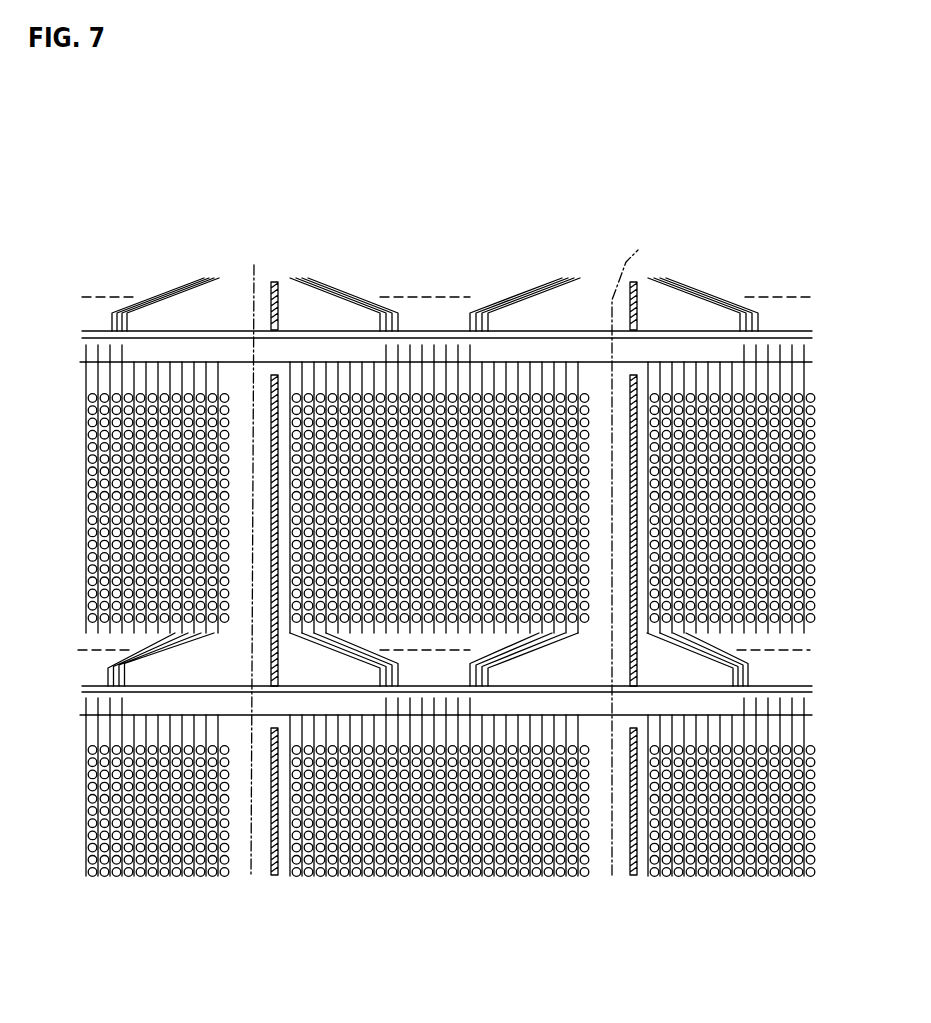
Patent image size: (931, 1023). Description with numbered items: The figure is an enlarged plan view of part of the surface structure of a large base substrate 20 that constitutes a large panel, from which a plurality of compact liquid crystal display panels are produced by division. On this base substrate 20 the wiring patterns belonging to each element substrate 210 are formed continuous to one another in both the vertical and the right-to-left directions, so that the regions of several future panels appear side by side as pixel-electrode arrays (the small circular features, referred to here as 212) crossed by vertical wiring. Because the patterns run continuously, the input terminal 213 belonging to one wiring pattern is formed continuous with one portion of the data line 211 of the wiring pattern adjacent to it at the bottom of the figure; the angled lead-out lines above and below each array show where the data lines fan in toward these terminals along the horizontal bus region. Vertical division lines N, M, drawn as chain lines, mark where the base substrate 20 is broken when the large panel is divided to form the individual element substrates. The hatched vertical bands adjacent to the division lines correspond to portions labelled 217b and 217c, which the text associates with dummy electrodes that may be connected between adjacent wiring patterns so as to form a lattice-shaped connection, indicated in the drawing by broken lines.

The base substrate 20 is at (471, 132).
The element substrate 210 is at (243, 380).
The data line 211 is at (86, 380).
The pixel electrodes 212 is at (580, 868).
The input terminal 213 is at (86, 350).
The sealing member 217b is at (272, 866).
The sealing member 217c is at (533, 325).
The division line M is at (298, 372).
The division line N is at (643, 233).